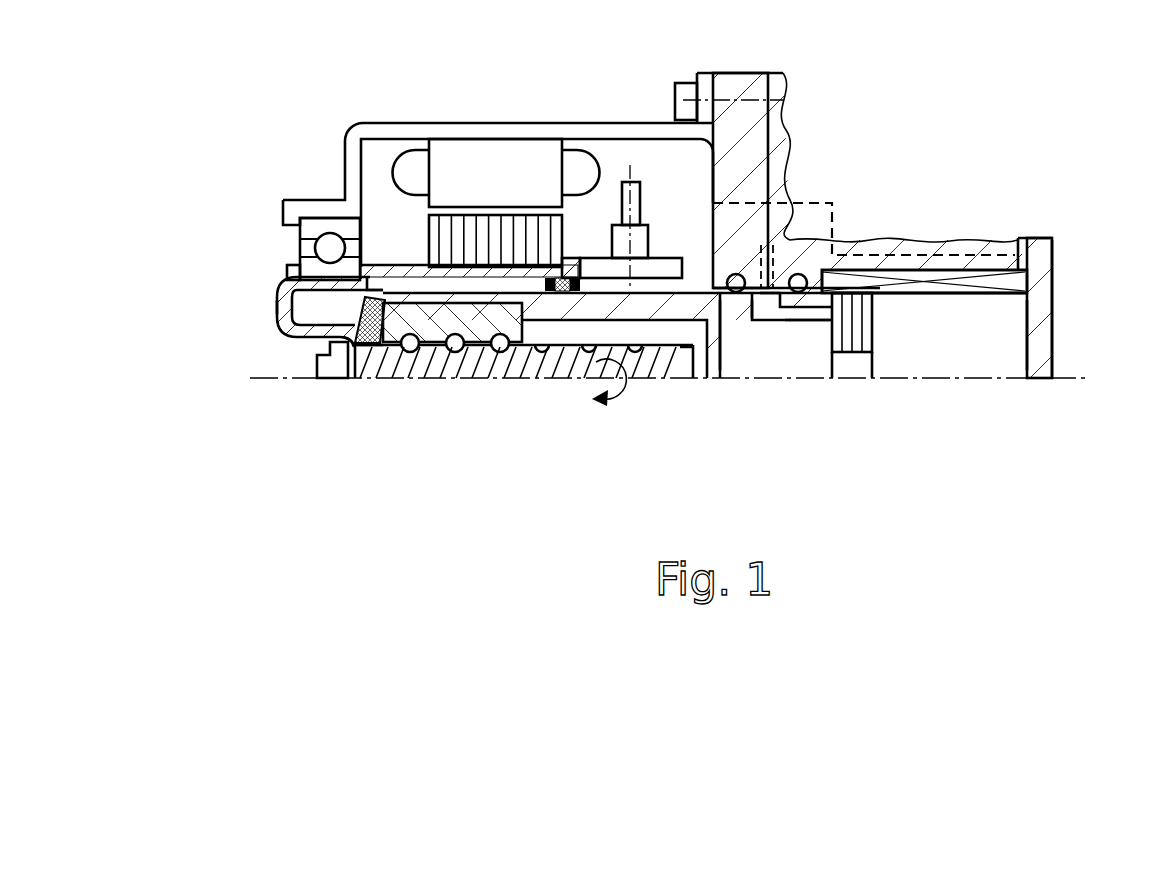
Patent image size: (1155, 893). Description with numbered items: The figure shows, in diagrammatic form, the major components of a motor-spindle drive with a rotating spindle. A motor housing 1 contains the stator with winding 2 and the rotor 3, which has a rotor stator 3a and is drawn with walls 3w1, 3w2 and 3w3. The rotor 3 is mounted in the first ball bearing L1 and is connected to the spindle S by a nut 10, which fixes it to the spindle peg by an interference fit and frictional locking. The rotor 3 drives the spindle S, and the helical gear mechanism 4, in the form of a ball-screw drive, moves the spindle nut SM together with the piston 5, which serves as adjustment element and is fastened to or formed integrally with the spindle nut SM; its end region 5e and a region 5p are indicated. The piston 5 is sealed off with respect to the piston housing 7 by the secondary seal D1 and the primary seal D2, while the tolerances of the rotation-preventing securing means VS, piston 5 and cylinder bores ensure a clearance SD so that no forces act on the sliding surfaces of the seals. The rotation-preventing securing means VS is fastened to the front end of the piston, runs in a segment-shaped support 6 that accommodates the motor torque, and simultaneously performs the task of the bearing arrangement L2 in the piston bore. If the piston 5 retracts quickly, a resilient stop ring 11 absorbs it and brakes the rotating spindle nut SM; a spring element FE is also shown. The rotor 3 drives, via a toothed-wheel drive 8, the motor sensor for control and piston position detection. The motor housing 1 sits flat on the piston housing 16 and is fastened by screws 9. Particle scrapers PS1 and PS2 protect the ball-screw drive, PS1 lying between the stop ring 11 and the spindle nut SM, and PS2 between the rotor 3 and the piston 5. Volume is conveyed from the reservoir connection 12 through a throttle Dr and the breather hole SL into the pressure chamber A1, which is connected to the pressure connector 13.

The motor housing 1 is at (448, 130).
The stator 2 is at (511, 155).
The rotor 3 is at (378, 222).
The rotor stator 3a is at (560, 235).
The wall 3w1 is at (318, 285).
The wall 3w2 is at (315, 333).
The wall 3w3 is at (280, 315).
The ball-screw drive 4 is at (527, 372).
The piston 5 is at (636, 312).
The end region of the adjustment element 5e is at (752, 365).
The shaft pocket 5p is at (805, 358).
The support of rotation-preventing securing means 6 is at (922, 292).
The piston housing 7 is at (833, 224).
The toothed gear drive of the motor sensor 8 is at (643, 228).
The motor fastening 9 is at (684, 92).
The nut 10 is at (322, 366).
The stop ring 11 is at (362, 365).
The connection to reservoir 12 is at (776, 165).
The pressure connector 13 is at (1018, 248).
The piston housing 16 is at (1043, 327).
The pressure chamber A1 is at (990, 350).
The seal 1 D1 is at (742, 292).
The seal 2 D2 is at (806, 298).
The throttle Dr is at (812, 197).
The spring element FE is at (284, 308).
The motor bearing L1 is at (298, 268).
The 2nd bearing on rotation-preventing securing means L2 is at (862, 310).
The particle scraper PS1 is at (380, 295).
The particle scraper PS2 is at (558, 280).
The spindle S is at (423, 372).
The clearance of piston with respect to seal SD is at (757, 294).
The breather hole SL is at (800, 294).
The spindle nut SM is at (480, 372).
The rotation-preventing securing means VS is at (873, 323).